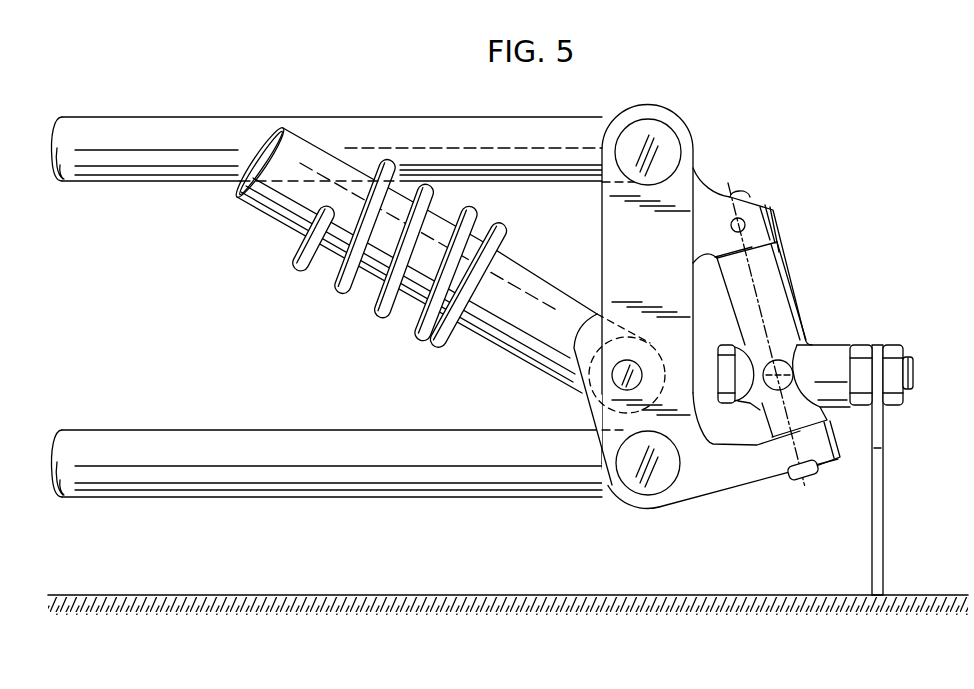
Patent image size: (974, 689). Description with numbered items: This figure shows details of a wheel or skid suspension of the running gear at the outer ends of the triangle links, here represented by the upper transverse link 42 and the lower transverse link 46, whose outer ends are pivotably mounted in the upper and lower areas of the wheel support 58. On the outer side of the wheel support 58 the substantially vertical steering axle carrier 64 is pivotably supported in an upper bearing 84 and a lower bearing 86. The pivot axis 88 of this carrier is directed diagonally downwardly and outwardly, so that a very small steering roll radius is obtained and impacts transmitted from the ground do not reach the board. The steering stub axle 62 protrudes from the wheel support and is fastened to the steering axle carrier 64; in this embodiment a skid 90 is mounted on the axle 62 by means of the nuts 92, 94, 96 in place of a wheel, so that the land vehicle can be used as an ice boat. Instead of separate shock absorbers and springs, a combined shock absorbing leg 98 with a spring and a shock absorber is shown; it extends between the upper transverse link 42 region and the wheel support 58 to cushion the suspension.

The upper transverse link 42 is at (181, 131).
The lower transverse link 46 is at (160, 443).
The wheel support 58 is at (686, 138).
The combined shock absorbing leg 98 is at (271, 219).
The upper bearing 84 is at (772, 228).
The pivot axis 88 is at (729, 184).
The steering axle carrier 64 is at (770, 273).
The nut 92 is at (728, 346).
The nut 94 is at (857, 345).
The nut 96 is at (891, 345).
The steering stub axle 62 is at (913, 372).
The skid 90 is at (883, 458).
The lower bearing 86 is at (817, 475).